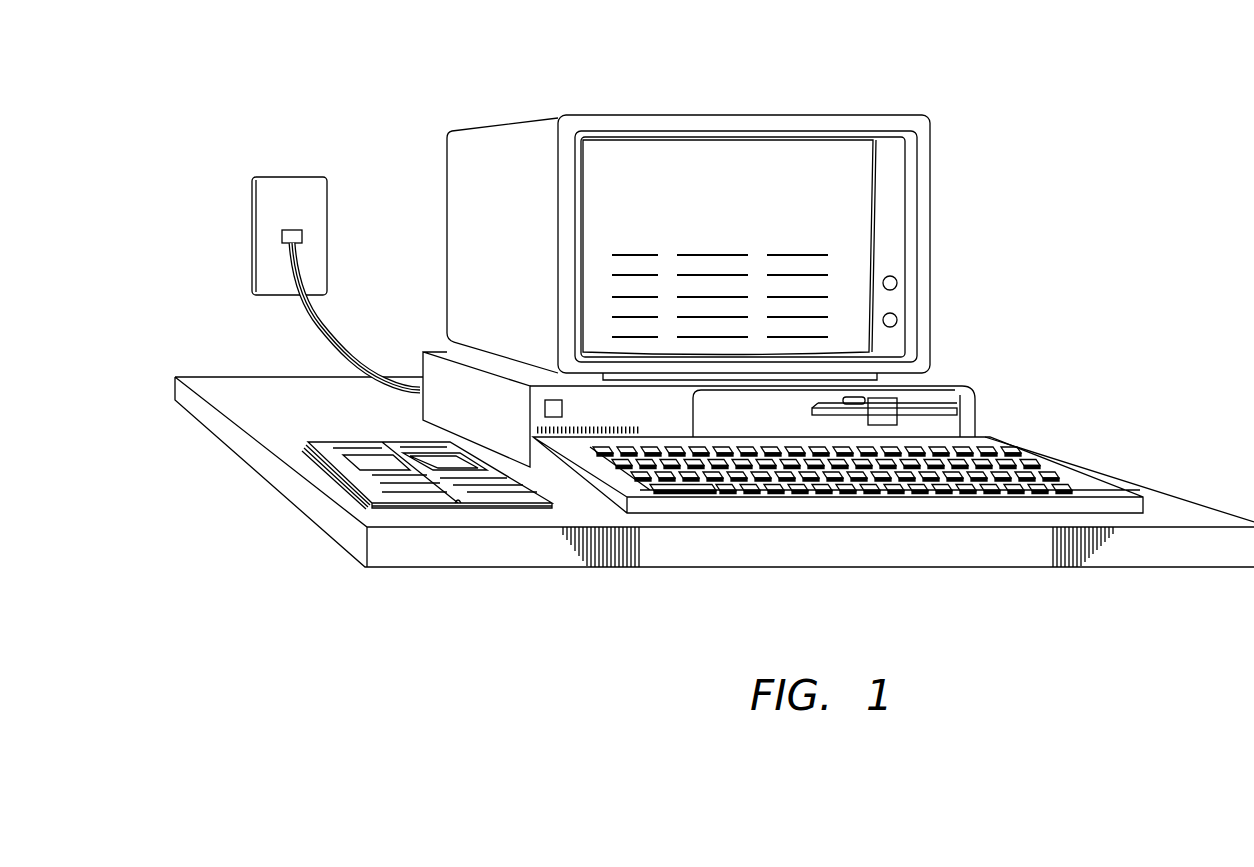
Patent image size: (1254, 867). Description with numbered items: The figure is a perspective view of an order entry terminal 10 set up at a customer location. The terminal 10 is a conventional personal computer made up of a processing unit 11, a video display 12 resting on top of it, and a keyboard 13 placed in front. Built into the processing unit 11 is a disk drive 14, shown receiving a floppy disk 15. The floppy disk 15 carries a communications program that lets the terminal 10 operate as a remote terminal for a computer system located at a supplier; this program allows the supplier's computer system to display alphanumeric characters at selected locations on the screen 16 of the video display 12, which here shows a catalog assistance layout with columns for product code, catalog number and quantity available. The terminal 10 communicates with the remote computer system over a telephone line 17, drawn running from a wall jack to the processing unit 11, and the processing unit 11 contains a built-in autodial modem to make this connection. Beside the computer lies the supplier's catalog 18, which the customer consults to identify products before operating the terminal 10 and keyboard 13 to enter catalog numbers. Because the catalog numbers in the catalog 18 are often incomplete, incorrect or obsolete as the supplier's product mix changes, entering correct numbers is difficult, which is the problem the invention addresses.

The order entry terminal 10 is at (430, 88).
The processing unit 11 is at (955, 387).
The video display 12 is at (928, 232).
The keyboard 13 is at (1065, 425).
The disk drive 14 is at (972, 394).
The floppy disk 15 is at (837, 412).
The screen 16 is at (836, 140).
The telephone line 17 is at (335, 342).
The catalog 18 is at (350, 450).